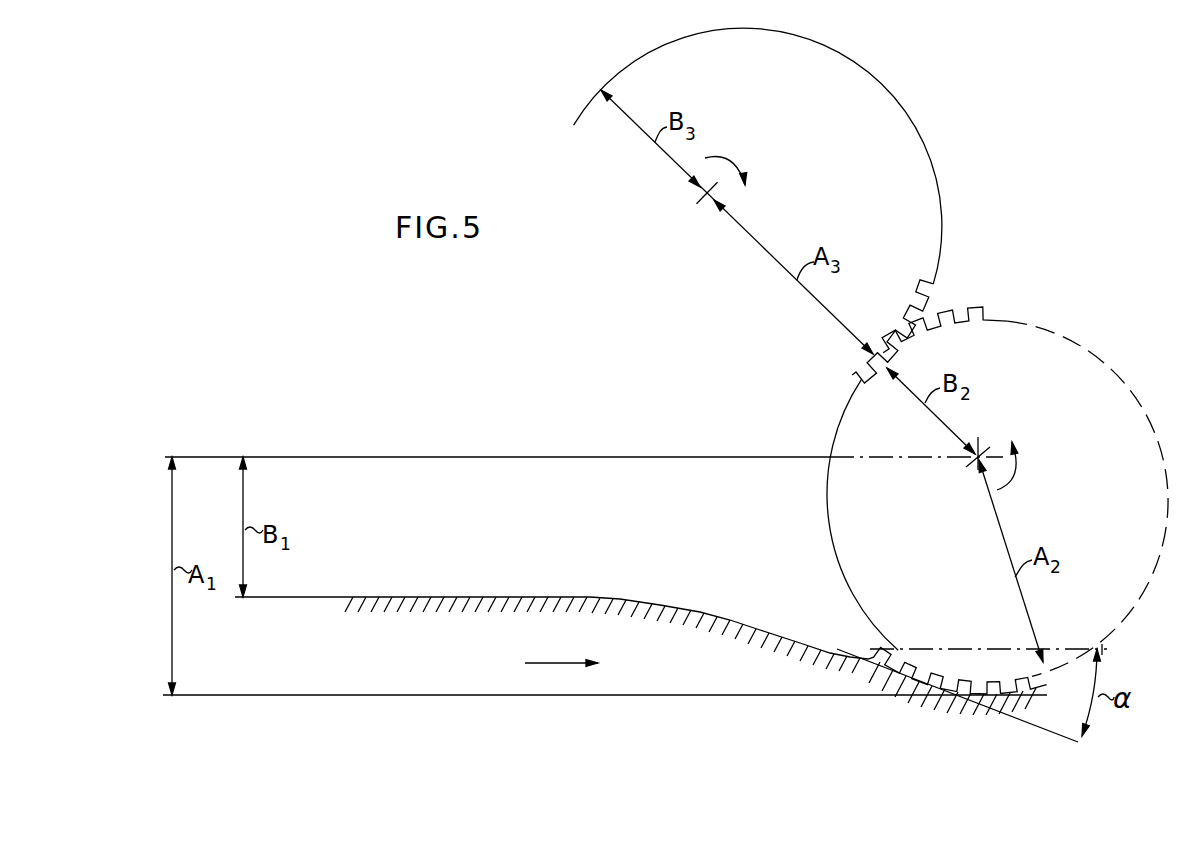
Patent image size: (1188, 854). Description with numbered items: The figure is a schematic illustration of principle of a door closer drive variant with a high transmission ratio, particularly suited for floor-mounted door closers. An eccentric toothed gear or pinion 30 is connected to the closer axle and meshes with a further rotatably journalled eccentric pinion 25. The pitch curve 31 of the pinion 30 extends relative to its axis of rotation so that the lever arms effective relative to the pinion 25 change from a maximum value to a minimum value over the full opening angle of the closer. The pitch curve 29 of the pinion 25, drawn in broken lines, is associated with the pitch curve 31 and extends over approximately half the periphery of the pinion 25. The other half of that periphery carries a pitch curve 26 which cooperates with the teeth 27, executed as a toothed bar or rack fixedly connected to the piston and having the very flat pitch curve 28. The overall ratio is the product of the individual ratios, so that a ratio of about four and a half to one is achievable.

The eccentric pinion 25 is at (1140, 425).
The pitch curve 26 is at (825, 505).
The gear 27 is at (464, 602).
The pitch curve 28 is at (716, 612).
The pitch curve 29 is at (1040, 326).
The eccentric toothed gear 30 is at (857, 77).
The pitch curve 31 is at (944, 196).